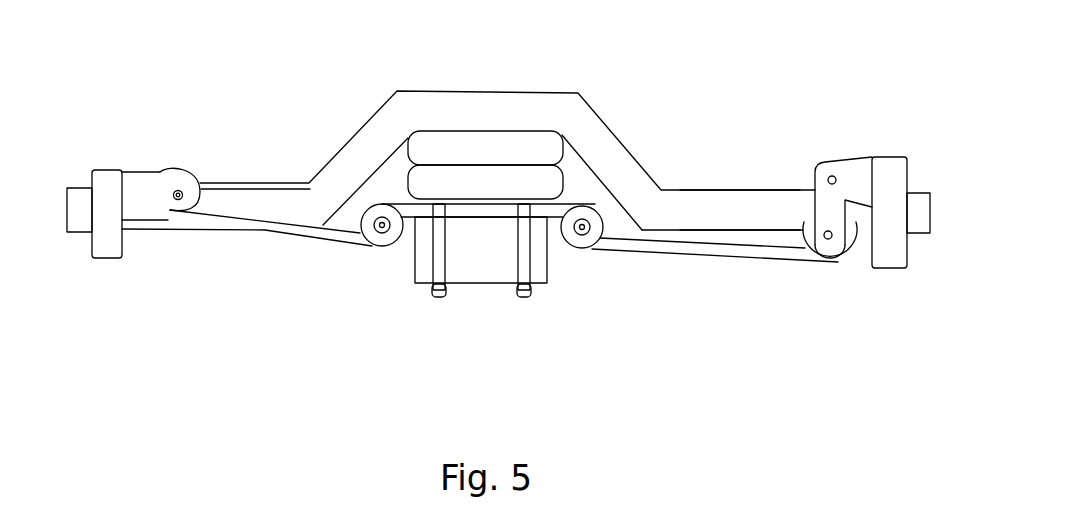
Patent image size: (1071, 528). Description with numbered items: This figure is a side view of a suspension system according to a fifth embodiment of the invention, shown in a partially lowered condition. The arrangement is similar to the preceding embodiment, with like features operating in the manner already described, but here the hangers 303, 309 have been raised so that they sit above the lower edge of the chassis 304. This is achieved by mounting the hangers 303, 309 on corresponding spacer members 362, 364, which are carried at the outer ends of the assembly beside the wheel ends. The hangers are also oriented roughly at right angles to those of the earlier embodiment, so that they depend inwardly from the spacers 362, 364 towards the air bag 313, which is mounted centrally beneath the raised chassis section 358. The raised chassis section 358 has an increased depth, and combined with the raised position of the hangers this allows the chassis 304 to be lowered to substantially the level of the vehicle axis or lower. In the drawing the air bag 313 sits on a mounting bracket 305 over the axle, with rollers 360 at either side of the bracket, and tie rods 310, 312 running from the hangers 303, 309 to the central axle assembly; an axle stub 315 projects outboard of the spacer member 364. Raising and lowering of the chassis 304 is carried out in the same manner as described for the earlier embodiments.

The hanger 303 is at (157, 183).
The chassis 304 is at (737, 212).
The mounting bracket 305 is at (497, 265).
The hanger 309 is at (858, 167).
The left tie rod 310 is at (260, 223).
The right tie rod 312 is at (758, 254).
The air spring 313 is at (476, 145).
The axle stub 315 is at (933, 250).
The raised chassis section 358 is at (594, 129).
The roller bearing 360 is at (407, 240).
The spacer member 362 is at (112, 182).
The spacer member 364 is at (883, 253).